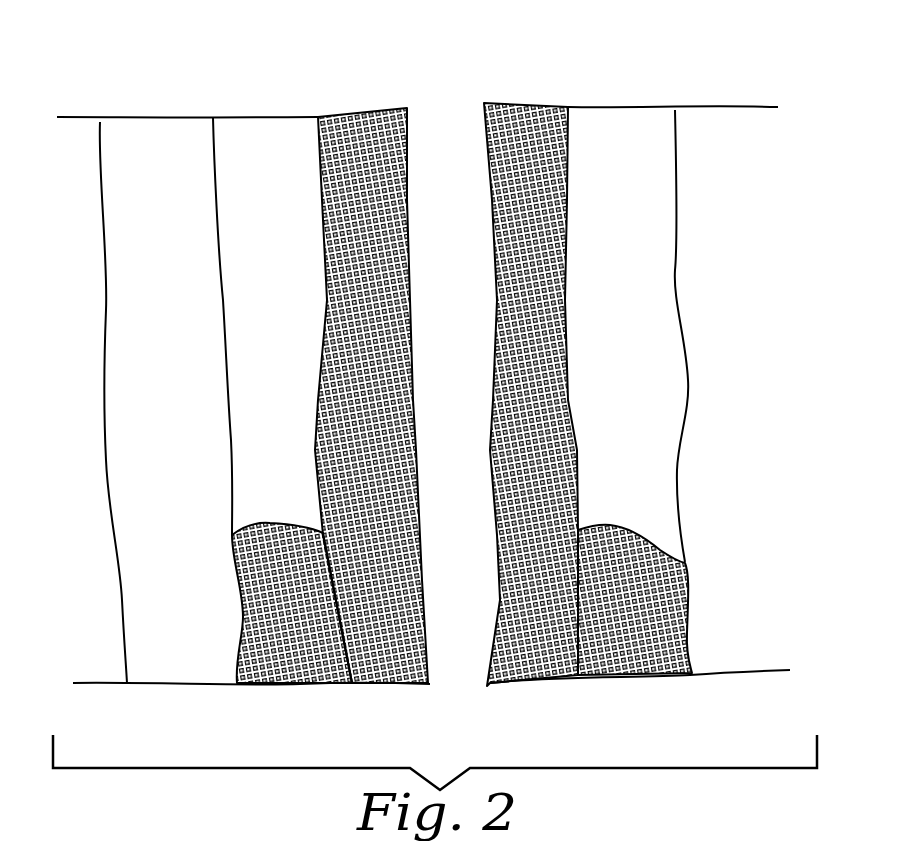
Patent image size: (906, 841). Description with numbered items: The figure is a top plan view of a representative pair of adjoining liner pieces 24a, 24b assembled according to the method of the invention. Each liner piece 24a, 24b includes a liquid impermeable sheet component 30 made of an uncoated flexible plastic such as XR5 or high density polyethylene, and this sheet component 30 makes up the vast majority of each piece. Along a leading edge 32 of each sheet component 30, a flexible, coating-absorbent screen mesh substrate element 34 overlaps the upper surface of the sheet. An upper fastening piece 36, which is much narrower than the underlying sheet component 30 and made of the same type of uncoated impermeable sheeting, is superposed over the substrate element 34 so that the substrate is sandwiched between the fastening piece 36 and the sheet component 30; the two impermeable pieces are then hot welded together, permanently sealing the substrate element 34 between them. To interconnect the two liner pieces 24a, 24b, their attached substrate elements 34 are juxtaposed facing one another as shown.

The liner piece 24a is at (188, 685).
The liner piece 24b is at (727, 671).
The sheet component 30 is at (143, 160).
The leading edge 32 is at (353, 685).
The substrate element 34 is at (360, 112).
The fastening piece 36 is at (257, 180).